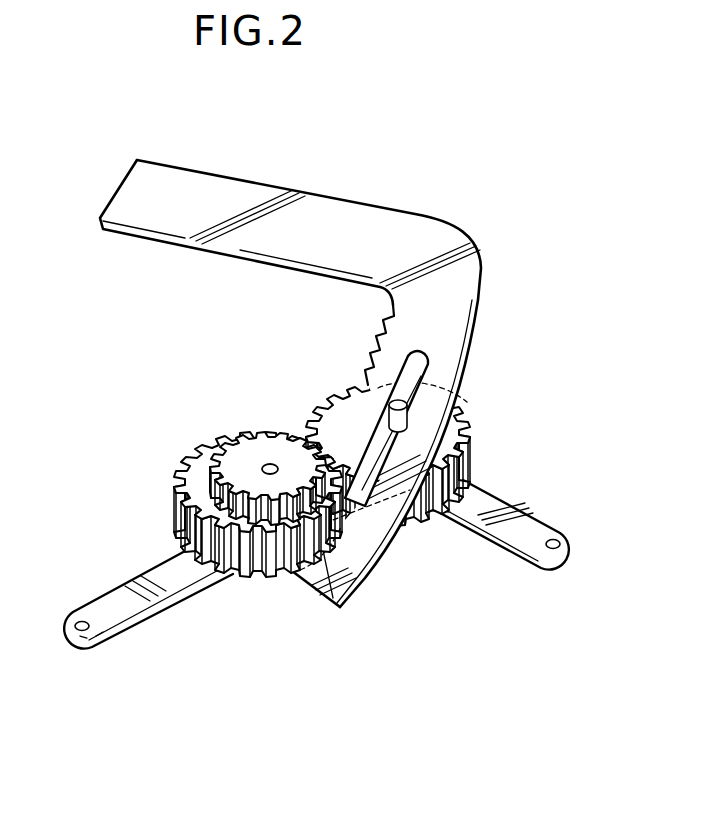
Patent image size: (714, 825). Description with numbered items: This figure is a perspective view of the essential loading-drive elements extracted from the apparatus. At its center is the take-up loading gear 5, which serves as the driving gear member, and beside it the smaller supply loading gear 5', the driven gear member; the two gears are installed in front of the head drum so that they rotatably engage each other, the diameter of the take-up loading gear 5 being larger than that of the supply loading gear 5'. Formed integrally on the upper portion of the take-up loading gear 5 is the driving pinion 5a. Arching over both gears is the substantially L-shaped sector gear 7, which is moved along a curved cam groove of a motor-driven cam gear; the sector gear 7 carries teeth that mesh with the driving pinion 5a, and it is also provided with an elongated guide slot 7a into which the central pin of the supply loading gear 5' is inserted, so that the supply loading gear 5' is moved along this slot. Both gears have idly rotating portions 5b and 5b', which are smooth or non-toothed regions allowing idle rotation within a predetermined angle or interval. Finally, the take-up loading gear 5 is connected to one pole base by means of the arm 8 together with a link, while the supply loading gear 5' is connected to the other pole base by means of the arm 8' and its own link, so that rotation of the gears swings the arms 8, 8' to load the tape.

The take-up loading gear 5 is at (230, 469).
The driving pinion 5a is at (263, 453).
The idly rotating portion 5b is at (331, 508).
The supply loading gear 5' is at (444, 454).
The idly rotating portion 5b' is at (420, 544).
The sector gear 7 is at (412, 247).
The guide slot 7a is at (430, 362).
The arm 8 is at (147, 577).
The arm 8' is at (494, 561).